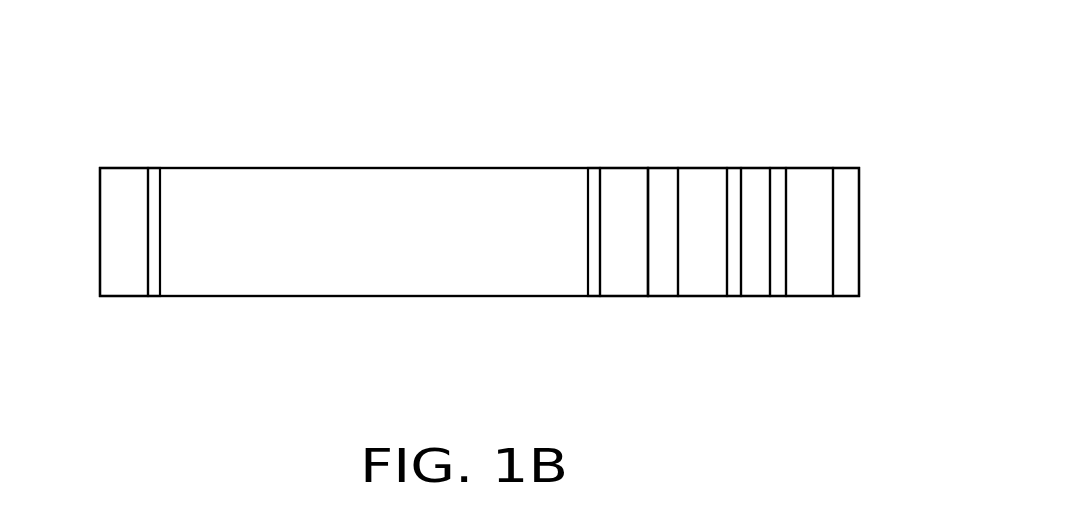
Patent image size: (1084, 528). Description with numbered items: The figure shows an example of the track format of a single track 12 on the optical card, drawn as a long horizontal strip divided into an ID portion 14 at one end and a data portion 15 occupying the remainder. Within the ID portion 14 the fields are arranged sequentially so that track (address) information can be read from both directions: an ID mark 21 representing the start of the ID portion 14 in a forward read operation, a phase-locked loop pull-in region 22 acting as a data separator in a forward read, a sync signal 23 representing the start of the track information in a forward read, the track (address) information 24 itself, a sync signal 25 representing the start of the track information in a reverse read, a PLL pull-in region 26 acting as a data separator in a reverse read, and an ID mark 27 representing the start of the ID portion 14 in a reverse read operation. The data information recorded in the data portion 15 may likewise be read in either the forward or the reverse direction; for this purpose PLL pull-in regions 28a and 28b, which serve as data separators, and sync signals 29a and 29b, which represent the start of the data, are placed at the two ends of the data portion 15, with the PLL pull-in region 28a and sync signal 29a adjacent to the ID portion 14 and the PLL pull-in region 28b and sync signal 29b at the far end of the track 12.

The track 12 is at (390, 160).
The ID portion 14 is at (860, 318).
The data portion 15 is at (648, 318).
The ID mark 21 is at (845, 168).
The PLL pull-in region 22 is at (808, 170).
The sync signal 23 is at (667, 343).
The track information 24 is at (762, 175).
The sync signal 25 is at (667, 343).
The PLL pull-in region 26 is at (701, 170).
The ID mark 27 is at (662, 173).
The PLL pull-in region 28a is at (617, 177).
The PLL pull-in region 28b is at (126, 168).
The sync signal 29a is at (592, 170).
The sync signal 29b is at (152, 168).